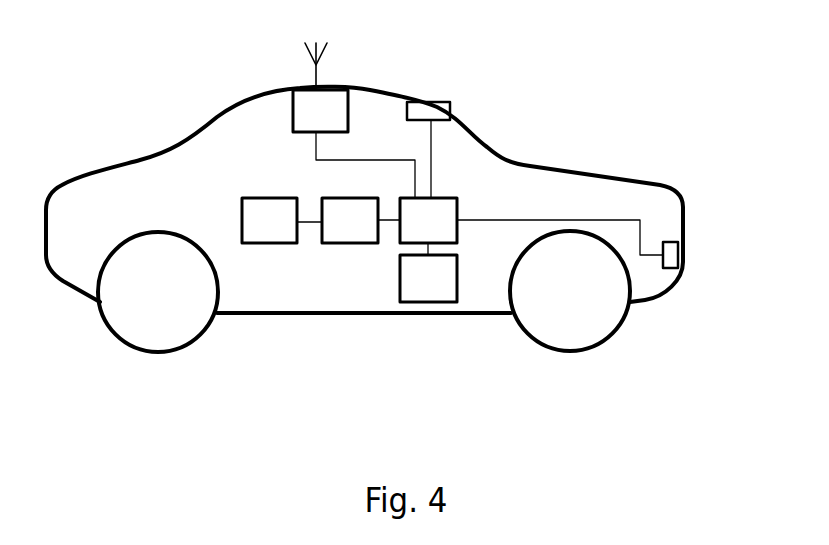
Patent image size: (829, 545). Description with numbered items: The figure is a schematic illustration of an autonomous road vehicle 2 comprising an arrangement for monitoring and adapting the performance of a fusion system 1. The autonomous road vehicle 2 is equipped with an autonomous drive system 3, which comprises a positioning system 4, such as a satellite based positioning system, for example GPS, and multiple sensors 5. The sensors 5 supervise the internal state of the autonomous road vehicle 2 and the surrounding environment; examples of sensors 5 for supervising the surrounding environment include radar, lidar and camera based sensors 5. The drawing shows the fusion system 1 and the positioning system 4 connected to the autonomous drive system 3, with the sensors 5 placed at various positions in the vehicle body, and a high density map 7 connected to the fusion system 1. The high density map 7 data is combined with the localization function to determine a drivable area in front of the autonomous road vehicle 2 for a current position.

The fusion system 1 is at (342, 235).
The autonomous road vehicle 2 is at (379, 75).
The autonomous drive system 3 is at (420, 235).
The positioning system 4 is at (310, 125).
The sensors 5 is at (427, 110).
The high density map 7 is at (262, 235).